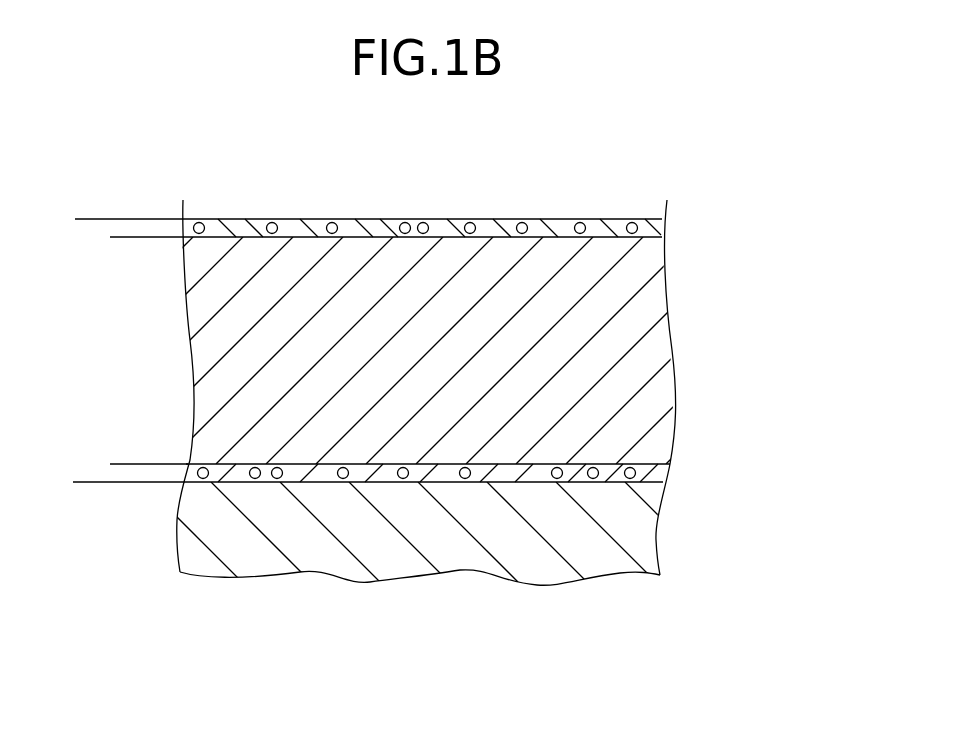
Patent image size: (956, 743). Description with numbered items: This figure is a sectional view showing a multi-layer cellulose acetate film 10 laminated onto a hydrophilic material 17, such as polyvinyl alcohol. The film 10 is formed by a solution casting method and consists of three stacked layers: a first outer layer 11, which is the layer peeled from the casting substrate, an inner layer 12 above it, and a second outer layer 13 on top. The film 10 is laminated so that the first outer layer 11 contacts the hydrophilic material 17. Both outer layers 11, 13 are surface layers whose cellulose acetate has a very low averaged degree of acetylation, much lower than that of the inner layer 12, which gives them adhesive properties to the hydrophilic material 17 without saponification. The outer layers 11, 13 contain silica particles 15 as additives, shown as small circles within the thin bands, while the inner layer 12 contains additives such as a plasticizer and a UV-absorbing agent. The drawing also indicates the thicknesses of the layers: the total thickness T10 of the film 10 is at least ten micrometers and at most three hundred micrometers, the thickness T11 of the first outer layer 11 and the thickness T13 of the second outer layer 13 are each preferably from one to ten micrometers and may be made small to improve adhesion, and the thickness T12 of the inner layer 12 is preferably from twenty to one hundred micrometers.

The film 10 is at (536, 601).
The first outer layer 11 is at (667, 472).
The inner layer 12 is at (652, 310).
The second outer layer 13 is at (657, 226).
The silica particles 15 is at (523, 221).
The hydrophilic material 17 is at (407, 557).
The thickness of the film T10 is at (83, 219).
The thickness of the first outer layer T11 is at (125, 410).
The thickness of the inner layer T12 is at (158, 237).
The thickness of the second outer layer T13 is at (127, 277).